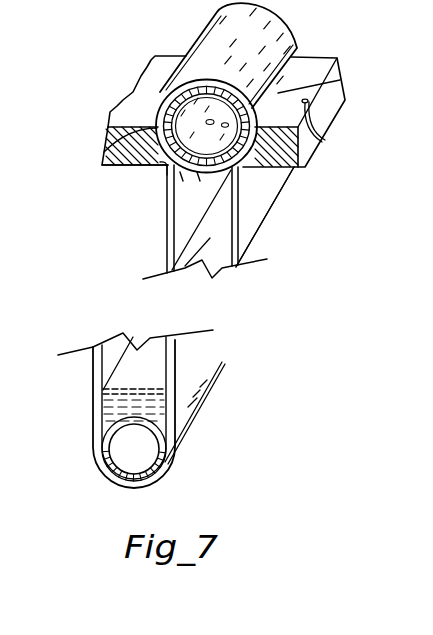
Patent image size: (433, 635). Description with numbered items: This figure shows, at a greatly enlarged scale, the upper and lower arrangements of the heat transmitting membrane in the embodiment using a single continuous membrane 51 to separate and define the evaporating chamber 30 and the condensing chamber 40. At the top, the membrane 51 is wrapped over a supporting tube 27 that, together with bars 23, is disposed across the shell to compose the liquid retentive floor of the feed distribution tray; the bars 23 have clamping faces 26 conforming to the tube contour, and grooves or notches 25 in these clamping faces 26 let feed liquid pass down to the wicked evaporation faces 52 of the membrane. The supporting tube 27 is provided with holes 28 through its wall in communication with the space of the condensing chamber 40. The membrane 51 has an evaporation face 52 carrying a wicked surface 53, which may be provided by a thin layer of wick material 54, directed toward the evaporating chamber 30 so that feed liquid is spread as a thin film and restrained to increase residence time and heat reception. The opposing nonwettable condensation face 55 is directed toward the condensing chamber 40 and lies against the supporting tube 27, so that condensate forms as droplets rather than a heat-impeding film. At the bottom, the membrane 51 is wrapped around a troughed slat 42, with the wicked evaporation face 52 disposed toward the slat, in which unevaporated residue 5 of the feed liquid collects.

The bar 23 is at (110, 150).
The groove or notch 25 is at (340, 80).
The clamping face 26 is at (124, 160).
The supporting tube 27 is at (156, 163).
The hole 28 is at (198, 183).
The evaporating chamber 30 is at (146, 360).
The condensing chamber 40 is at (170, 233).
The troughed slat 42 is at (148, 472).
The residue 5 is at (143, 410).
The membrane 51 is at (230, 234).
The evaporation face 52 is at (256, 204).
The wicked surface 53 is at (278, 213).
The wick material 54 is at (232, 266).
The condensation face 55 is at (193, 370).